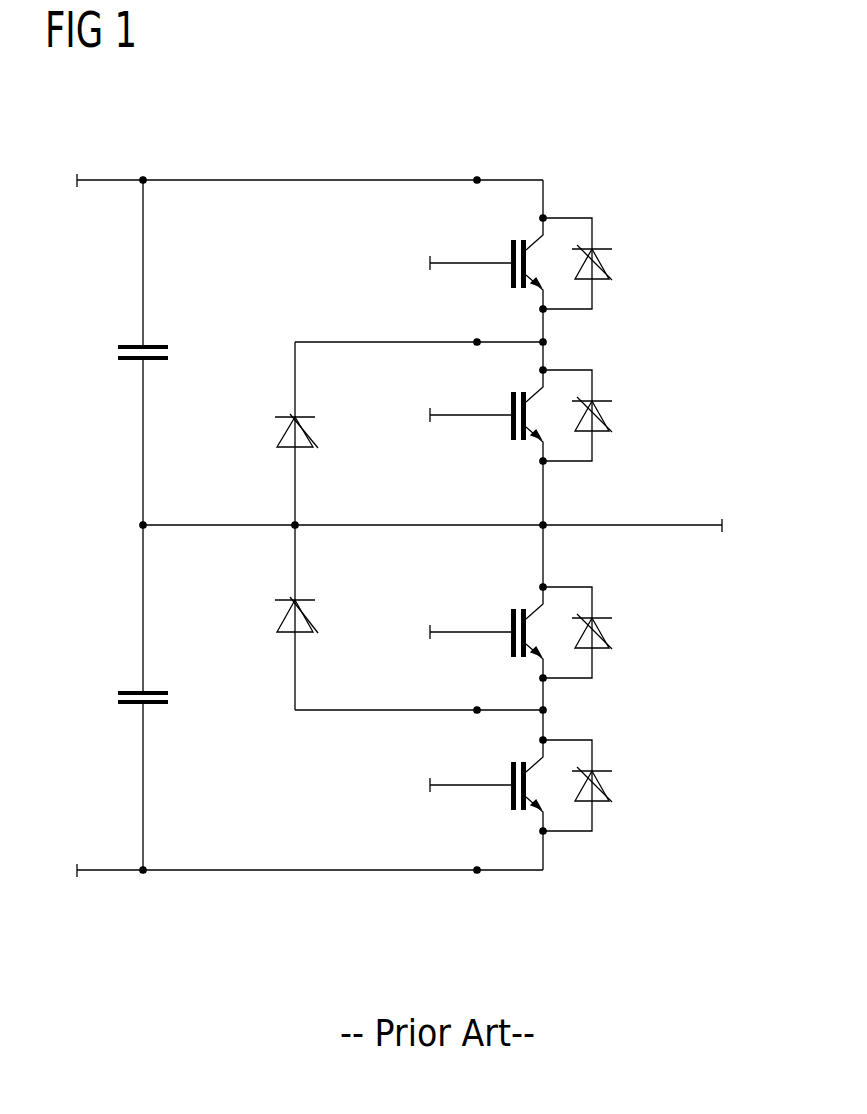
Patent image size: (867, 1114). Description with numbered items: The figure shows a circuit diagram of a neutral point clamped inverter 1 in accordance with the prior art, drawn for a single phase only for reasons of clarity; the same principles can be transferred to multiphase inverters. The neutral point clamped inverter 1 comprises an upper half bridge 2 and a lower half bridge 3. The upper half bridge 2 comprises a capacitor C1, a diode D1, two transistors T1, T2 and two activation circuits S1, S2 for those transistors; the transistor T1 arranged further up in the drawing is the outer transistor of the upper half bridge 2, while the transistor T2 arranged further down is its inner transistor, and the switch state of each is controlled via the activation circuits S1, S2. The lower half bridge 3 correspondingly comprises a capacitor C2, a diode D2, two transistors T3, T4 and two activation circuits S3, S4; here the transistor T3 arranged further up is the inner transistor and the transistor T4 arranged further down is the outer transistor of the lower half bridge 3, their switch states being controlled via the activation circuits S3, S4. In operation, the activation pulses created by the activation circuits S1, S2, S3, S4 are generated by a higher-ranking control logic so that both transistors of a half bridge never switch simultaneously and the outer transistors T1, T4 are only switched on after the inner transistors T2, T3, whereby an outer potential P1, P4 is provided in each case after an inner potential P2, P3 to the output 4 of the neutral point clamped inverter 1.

The neutral point clamped inverter 1 is at (316, 110).
The upper half bridge 2 is at (716, 284).
The lower half bridge 3 is at (716, 674).
The output 4 is at (690, 525).
The outer potential P1 is at (477, 180).
The inner potential P2 is at (477, 342).
The inner potential P3 is at (477, 710).
The outer potential P4 is at (477, 870).
The capacitor C1 is at (130, 347).
The capacitor C2 is at (130, 693).
The diode D1 is at (279, 432).
The diode D2 is at (279, 617).
The outer transistor T1 is at (609, 261).
The inner transistor T2 is at (609, 413).
The inner transistor T3 is at (609, 630).
The outer transistor T4 is at (609, 783).
The activation circuit S1 is at (458, 263).
The activation circuit S2 is at (458, 415).
The activation circuit S3 is at (458, 632).
The activation circuit S4 is at (458, 785).